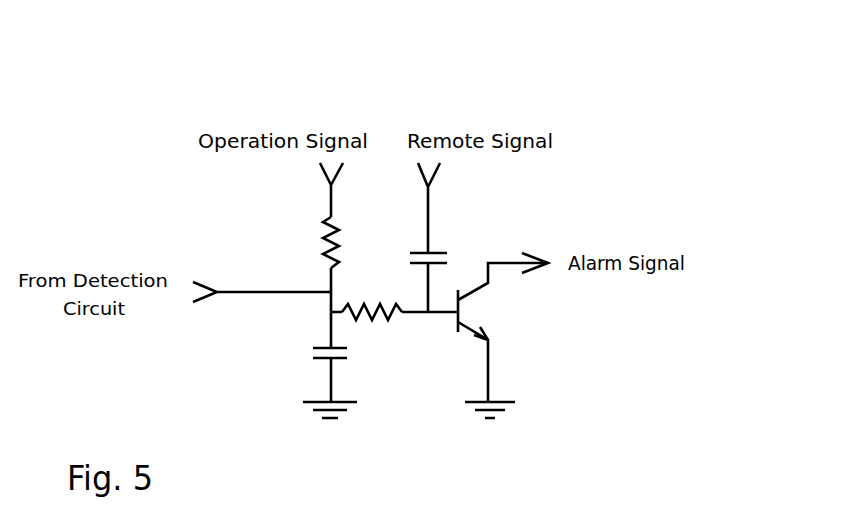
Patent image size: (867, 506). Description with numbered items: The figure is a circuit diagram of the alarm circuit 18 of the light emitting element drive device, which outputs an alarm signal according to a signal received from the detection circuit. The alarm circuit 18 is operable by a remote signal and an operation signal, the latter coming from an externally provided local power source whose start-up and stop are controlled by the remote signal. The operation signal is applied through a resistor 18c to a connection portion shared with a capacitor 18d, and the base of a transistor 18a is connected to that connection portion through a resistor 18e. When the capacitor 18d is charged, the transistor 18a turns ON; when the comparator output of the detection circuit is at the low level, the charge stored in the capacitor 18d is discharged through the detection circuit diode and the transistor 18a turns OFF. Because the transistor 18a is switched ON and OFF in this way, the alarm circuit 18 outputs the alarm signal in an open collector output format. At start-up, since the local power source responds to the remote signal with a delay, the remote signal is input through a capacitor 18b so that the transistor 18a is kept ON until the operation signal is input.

The alarm circuit 18 is at (382, 135).
The transistor 18a is at (468, 330).
The capacitor 18b is at (433, 252).
The resistor 18c is at (322, 232).
The capacitor 18d is at (322, 356).
The resistor 18e is at (380, 318).